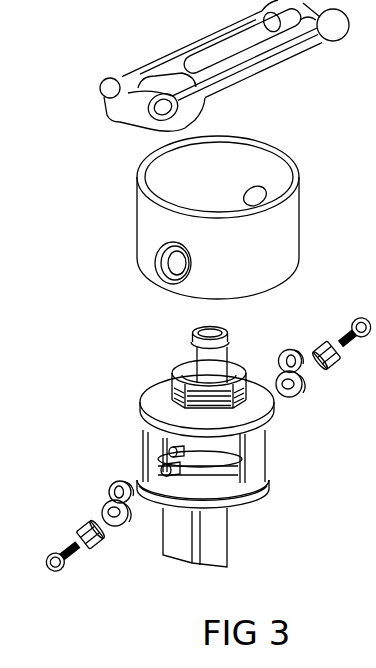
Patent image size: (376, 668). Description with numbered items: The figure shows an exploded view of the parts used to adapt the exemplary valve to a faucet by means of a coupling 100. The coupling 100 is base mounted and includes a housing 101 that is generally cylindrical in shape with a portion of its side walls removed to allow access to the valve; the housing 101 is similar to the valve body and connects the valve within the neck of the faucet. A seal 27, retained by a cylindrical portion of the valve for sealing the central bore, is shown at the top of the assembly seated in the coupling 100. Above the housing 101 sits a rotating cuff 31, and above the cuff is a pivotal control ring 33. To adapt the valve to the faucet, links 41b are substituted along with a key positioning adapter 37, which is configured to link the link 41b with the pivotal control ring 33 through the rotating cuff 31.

The pivotal control ring 33 is at (277, 67).
The rotating cuff 31 is at (300, 241).
The seal 27 is at (192, 347).
The coupling 100 is at (273, 457).
The housing 101 is at (272, 490).
The key positioning adapter 37 is at (322, 344).
The link 41b is at (305, 381).